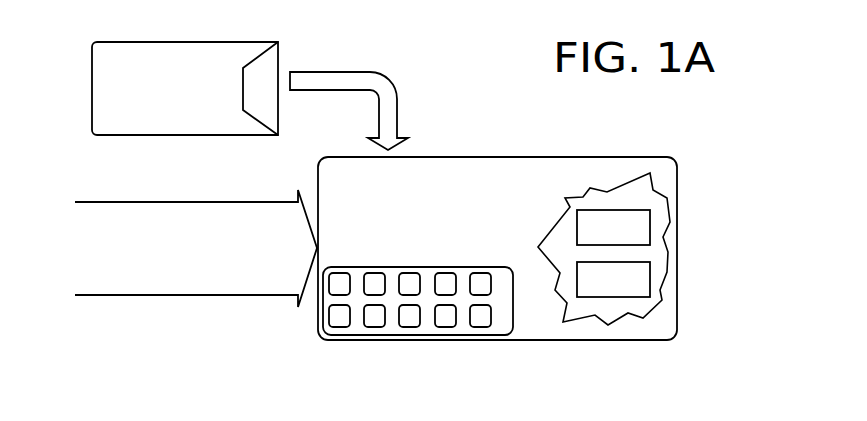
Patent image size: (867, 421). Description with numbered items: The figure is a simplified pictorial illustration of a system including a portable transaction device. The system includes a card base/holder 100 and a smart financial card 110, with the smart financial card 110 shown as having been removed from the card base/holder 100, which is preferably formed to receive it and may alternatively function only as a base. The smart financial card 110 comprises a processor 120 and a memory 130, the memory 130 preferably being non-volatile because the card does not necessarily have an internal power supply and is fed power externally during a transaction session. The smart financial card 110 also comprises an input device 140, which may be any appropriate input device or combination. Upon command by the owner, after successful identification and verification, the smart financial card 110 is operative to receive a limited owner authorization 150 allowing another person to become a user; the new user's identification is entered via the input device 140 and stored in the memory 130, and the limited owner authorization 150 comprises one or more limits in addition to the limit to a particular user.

The card base/holder 100 is at (182, 42).
The smart financial card 110 is at (593, 158).
The processor 120 is at (637, 228).
The memory 130 is at (638, 285).
The input device 140 is at (415, 330).
The limited owner authorization 150 is at (288, 203).